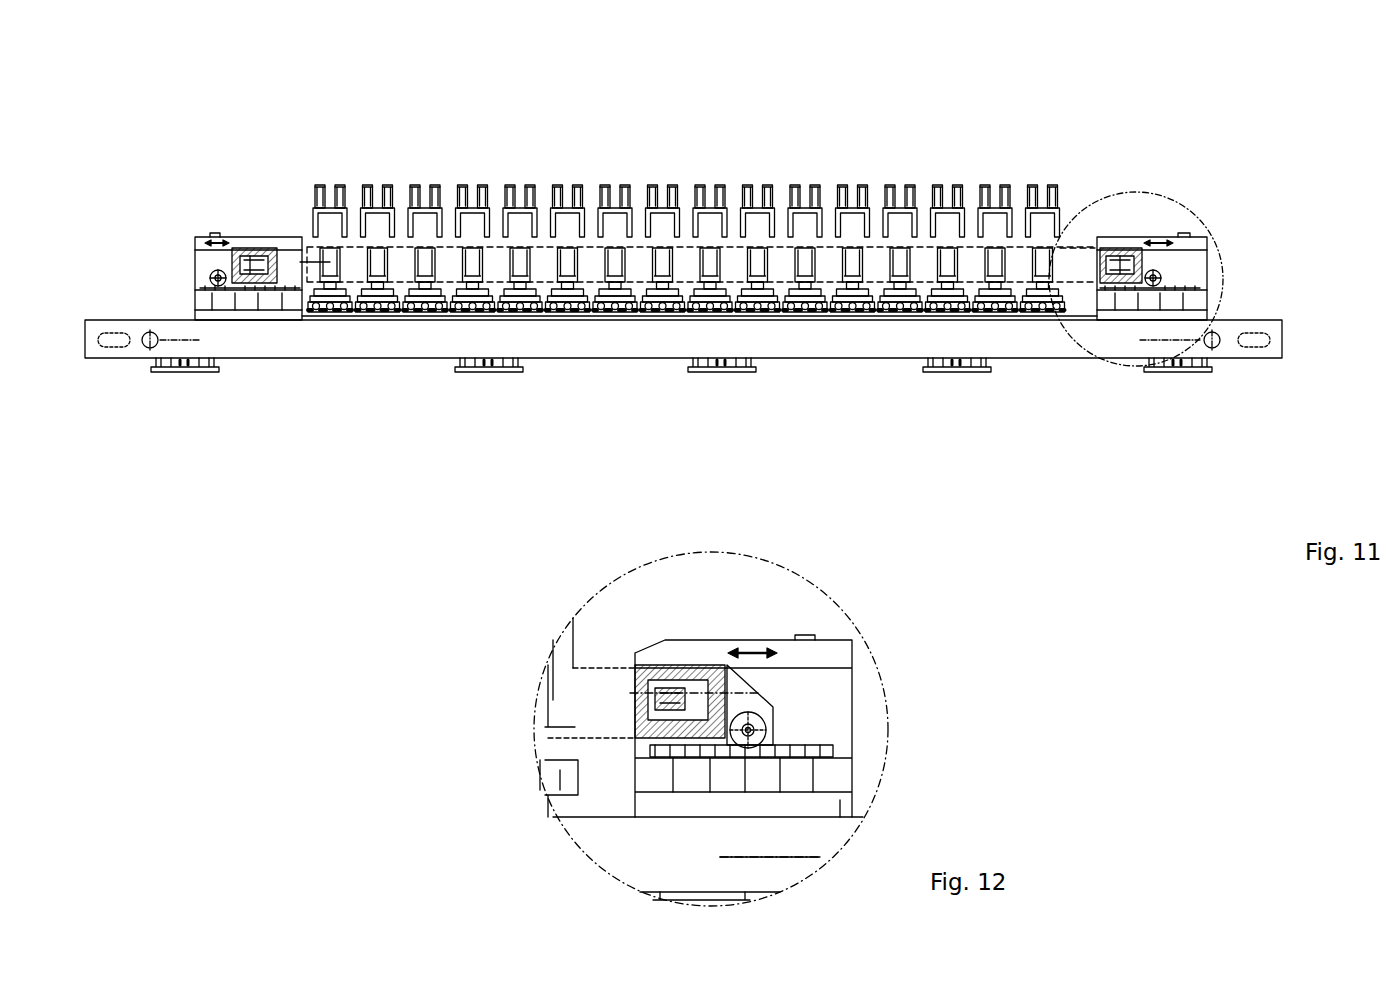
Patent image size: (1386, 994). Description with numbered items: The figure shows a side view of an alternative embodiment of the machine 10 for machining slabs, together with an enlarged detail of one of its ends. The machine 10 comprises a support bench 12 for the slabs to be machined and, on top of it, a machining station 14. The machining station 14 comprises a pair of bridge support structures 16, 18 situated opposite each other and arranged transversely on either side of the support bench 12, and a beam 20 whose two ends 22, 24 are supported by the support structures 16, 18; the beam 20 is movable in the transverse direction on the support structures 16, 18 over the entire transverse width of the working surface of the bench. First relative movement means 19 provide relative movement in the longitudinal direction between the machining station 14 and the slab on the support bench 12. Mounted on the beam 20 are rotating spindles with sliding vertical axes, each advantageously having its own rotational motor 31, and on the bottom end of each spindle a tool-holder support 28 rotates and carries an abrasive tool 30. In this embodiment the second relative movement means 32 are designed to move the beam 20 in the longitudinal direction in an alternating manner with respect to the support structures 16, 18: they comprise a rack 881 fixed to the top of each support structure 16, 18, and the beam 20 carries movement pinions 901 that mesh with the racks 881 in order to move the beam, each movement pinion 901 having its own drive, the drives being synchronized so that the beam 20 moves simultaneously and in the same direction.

In FIG. 11, the machine 10 is at (718, 238).
In FIG. 11, the support bench 12 is at (1283, 340).
In FIG. 11, the machining station 14 is at (601, 179).
In FIG. 11, the bridge support structure 16 is at (181, 305).
In FIG. 11, the bridge support structure 18 is at (1226, 278).
In FIG. 12, the bridge support structure 18 is at (807, 770).
In FIG. 11, the first relative movement means 19 is at (603, 320).
In FIG. 11, the beam 20 is at (307, 248).
In FIG. 11, the end of beam 22 is at (302, 262).
In FIG. 11, the end of beam 24 is at (1077, 250).
In FIG. 11, the tool-holder support 28 is at (1025, 280).
In FIG. 11, the abrasive tool 30 is at (1030, 305).
In FIG. 11, the rotational motor 31 is at (722, 186).
In FIG. 11, the second relative movement means 32 is at (1210, 240).
In FIG. 12, the rack 881 is at (825, 745).
In FIG. 12, the movement pinion 901 is at (755, 735).